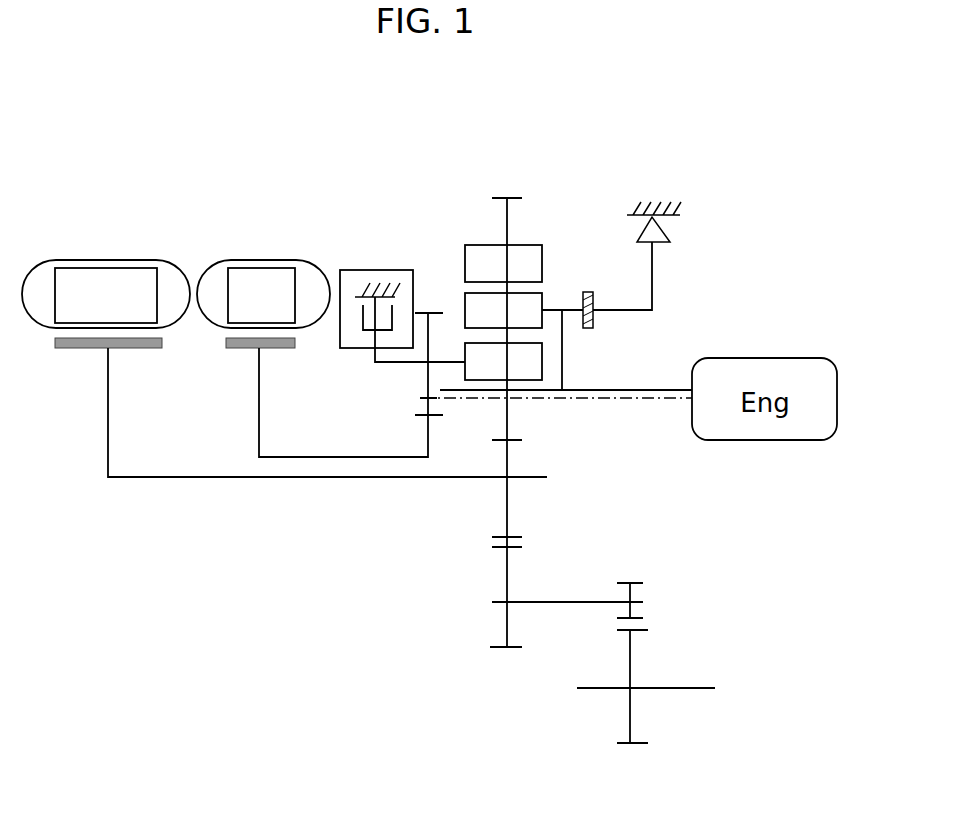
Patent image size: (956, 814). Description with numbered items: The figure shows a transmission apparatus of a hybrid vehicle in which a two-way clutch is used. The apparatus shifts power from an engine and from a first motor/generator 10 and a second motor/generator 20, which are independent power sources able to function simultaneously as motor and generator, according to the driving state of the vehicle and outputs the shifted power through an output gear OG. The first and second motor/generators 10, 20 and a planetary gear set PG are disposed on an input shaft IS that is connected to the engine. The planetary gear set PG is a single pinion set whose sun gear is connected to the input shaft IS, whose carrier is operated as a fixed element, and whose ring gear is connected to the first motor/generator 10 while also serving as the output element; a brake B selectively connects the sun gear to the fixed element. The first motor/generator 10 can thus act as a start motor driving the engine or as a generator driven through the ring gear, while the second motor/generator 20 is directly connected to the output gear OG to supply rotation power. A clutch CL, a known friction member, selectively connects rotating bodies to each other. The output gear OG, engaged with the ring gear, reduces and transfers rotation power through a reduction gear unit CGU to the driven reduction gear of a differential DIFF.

The first motor/generator MG1 10 is at (78, 268).
The second motor/generator MG2 20 is at (274, 268).
The brake B is at (382, 270).
The planetary gear set PG is at (475, 240).
The clutch CL is at (590, 282).
The input shaft IS is at (646, 389).
The output gear OG is at (496, 510).
The reduction gear unit CGU is at (568, 600).
The differential DIFF is at (693, 688).